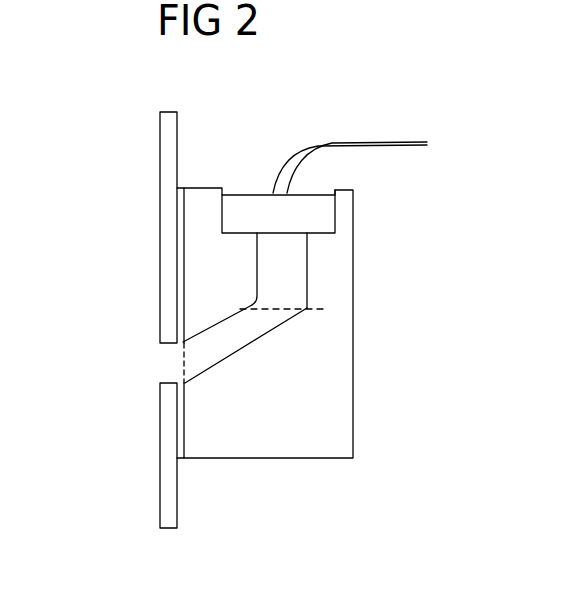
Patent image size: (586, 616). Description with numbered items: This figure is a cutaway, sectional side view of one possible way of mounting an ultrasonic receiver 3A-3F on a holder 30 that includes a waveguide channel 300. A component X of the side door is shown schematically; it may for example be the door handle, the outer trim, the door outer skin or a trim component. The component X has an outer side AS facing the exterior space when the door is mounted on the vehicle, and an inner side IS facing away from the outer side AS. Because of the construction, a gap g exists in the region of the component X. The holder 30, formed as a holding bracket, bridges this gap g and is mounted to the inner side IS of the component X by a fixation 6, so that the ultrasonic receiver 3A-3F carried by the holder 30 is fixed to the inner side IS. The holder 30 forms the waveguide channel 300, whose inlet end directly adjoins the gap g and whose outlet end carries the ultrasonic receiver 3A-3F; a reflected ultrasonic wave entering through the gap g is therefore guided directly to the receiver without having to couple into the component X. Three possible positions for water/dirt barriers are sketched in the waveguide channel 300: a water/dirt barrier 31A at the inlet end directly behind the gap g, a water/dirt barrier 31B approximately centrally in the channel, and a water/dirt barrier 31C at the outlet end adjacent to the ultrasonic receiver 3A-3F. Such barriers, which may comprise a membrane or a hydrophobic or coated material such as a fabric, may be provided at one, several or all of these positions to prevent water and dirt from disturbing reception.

The outer side AS is at (160, 163).
The fixation 6 is at (180, 187).
The inner side IS is at (185, 202).
The gap g is at (163, 362).
The ultrasonic receiver 3A-3F is at (317, 225).
The waveguide channel 300 is at (277, 277).
The water/dirt barrier 31C is at (297, 235).
The water/dirt barrier 31B is at (313, 310).
The water/dirt barrier 31A is at (183, 362).
The holder 30 is at (332, 383).
The component X is at (162, 478).